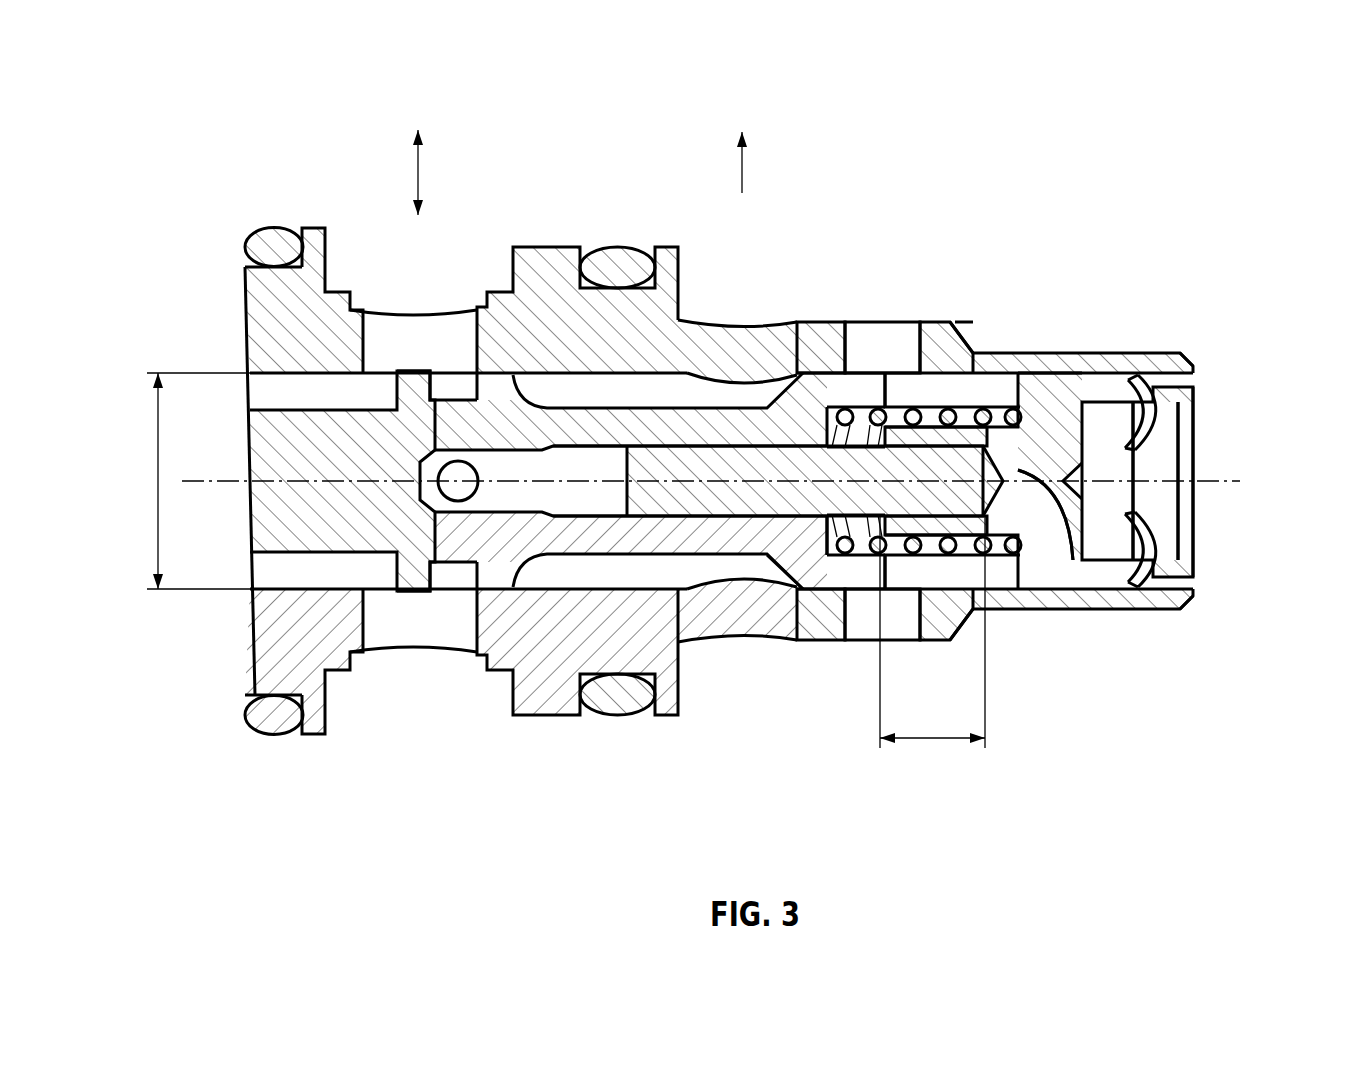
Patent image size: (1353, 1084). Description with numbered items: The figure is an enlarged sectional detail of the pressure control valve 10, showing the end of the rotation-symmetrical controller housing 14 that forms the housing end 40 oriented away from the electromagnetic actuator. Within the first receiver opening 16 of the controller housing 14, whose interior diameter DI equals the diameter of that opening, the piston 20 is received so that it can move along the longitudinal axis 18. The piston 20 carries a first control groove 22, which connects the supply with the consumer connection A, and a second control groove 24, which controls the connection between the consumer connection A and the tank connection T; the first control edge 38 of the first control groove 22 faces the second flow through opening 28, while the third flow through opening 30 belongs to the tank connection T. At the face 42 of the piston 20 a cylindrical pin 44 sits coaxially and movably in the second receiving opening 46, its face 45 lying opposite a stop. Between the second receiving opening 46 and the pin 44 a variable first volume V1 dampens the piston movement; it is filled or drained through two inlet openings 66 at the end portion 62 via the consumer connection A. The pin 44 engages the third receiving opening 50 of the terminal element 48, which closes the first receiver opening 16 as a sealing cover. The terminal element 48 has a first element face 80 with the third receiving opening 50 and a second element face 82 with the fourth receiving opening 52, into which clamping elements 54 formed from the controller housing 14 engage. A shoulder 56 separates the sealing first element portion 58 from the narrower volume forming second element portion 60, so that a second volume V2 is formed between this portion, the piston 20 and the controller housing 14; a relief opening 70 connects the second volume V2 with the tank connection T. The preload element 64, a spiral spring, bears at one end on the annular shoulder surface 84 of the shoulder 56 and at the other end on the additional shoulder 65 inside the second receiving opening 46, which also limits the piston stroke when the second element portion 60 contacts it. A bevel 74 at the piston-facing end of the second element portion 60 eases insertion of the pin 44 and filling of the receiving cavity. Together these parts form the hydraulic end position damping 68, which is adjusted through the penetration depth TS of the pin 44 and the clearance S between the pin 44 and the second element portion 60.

The pressure control valve 10 is at (808, 158).
The controller housing 14 is at (541, 265).
The first receiver opening 16 is at (355, 388).
The longitudinal axis 18 is at (1230, 484).
The piston 20 is at (297, 440).
The first control groove 22 is at (300, 555).
The second control groove 24 is at (620, 407).
The second flow through opening 28 is at (416, 330).
The third flow through opening 30 is at (758, 335).
The first control edge 38 is at (395, 625).
The housing end 40 is at (1215, 448).
The face 42 is at (876, 372).
The pin 44 is at (697, 462).
The face of the pin 45 is at (1070, 567).
The second receiving opening 46 is at (607, 520).
The terminal element 48 is at (1090, 362).
The third receiving opening 50 is at (938, 600).
The fourth receiving opening 52 is at (1128, 375).
The clamping elements 54 is at (1167, 580).
The shoulder 56 is at (1040, 358).
The first element portion 58 is at (1107, 577).
The second element portion 60 is at (1007, 402).
The end portion 62 is at (442, 356).
The preload element 64 is at (905, 370).
The additional shoulder 65 is at (813, 540).
The inlet openings 66 is at (580, 500).
The hydraulic end position damping 68 is at (995, 240).
The relief opening 70 is at (893, 372).
The bevel 74 is at (850, 372).
The first element face 80 is at (868, 620).
The second element face 82 is at (1170, 355).
The annular shoulder surface 84 is at (997, 567).
The consumer connection A is at (418, 173).
The tank connection T is at (742, 175).
The interior diameter DI is at (157, 483).
The penetration depth TS is at (933, 742).
The clearance S is at (1038, 567).
The first volume V1 is at (683, 645).
The second volume V2 is at (962, 372).